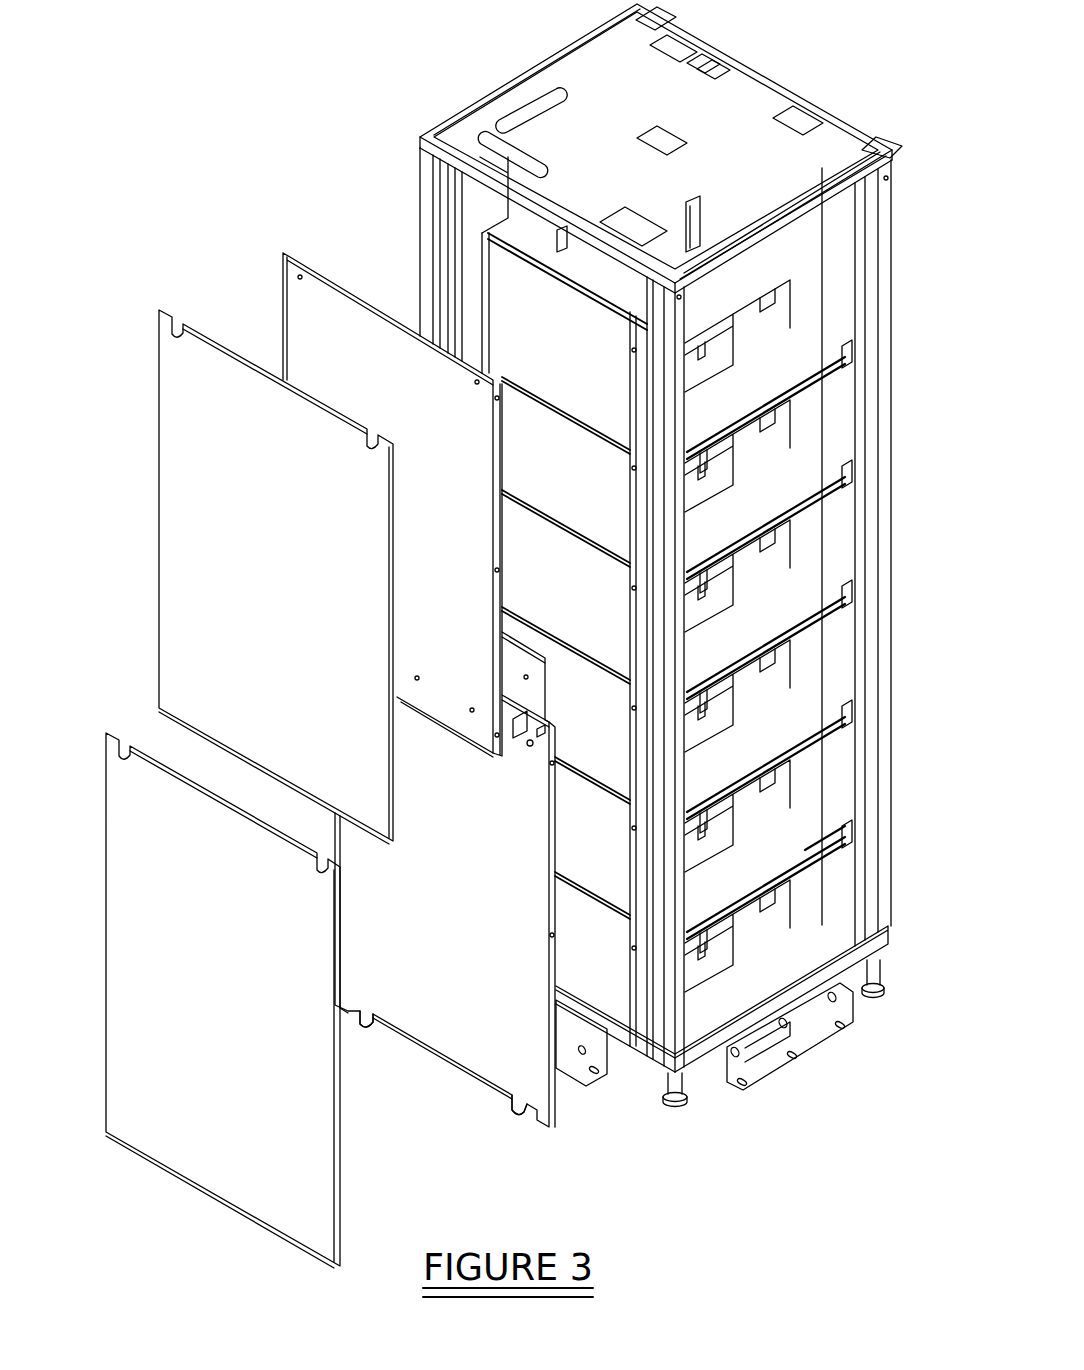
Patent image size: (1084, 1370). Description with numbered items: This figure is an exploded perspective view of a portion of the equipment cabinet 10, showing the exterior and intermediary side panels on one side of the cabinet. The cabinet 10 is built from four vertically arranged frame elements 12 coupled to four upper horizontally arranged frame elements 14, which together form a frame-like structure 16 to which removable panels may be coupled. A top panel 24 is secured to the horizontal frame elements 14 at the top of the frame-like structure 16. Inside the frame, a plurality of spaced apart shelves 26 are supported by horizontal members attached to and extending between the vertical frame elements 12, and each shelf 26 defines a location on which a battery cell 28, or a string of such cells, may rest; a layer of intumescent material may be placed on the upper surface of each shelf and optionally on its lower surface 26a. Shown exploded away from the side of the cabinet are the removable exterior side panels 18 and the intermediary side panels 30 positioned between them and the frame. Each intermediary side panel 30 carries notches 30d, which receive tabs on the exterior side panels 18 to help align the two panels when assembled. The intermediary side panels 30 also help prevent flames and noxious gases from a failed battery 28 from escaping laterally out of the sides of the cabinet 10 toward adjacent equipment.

The equipment cabinet 10 is at (413, 97).
The vertically arranged frame elements 12 is at (428, 268).
The upper horizontally arranged frame elements 14 is at (470, 112).
The frame-like structure 16 is at (326, 250).
The removable exterior side panels 18 is at (180, 372).
The top panel 24 is at (745, 135).
The shelves 26 is at (825, 848).
The lower surface of shelf 26a is at (810, 830).
The battery cell 28 is at (775, 370).
The intermediary side panels 30 is at (308, 308).
The notches 30d is at (370, 1032).